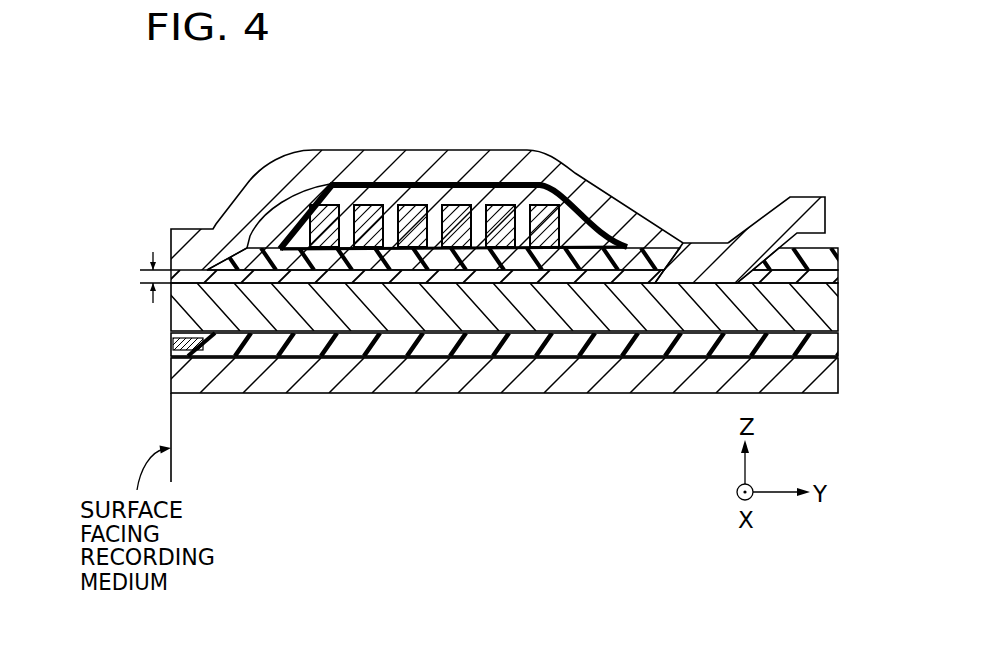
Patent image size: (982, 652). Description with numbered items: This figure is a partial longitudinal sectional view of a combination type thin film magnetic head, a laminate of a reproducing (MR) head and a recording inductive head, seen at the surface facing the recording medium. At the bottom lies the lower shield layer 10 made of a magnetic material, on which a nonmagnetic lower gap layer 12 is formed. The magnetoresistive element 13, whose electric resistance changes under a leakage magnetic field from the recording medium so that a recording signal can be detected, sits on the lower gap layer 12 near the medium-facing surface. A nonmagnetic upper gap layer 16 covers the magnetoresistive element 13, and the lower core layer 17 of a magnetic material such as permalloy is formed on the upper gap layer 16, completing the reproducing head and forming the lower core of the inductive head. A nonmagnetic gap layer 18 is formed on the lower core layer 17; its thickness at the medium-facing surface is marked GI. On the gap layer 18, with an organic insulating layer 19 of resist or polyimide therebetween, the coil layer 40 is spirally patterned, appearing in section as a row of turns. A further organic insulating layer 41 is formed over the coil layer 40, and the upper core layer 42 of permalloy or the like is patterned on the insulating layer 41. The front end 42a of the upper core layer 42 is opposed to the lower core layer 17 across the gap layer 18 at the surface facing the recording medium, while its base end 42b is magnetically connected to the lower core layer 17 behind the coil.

The lower shield layer 10 is at (612, 371).
The lower gap layer 12 is at (192, 358).
The magnetoresistive element 13 is at (183, 349).
The upper gap layer 16 is at (208, 342).
The lower core layer 17 is at (186, 312).
The gap layer 18 is at (367, 272).
The insulating layer 19 is at (442, 262).
The coil layer 40 is at (409, 190).
The insulating layer 41 is at (283, 238).
The upper core layer 42 is at (498, 160).
The front end 42a is at (186, 252).
The base end 42b is at (710, 265).
The gap length GI is at (144, 277).